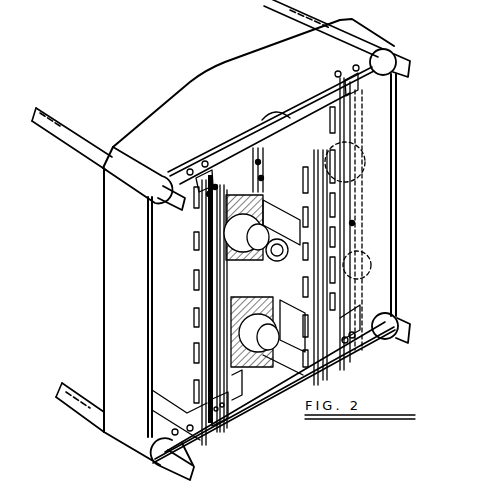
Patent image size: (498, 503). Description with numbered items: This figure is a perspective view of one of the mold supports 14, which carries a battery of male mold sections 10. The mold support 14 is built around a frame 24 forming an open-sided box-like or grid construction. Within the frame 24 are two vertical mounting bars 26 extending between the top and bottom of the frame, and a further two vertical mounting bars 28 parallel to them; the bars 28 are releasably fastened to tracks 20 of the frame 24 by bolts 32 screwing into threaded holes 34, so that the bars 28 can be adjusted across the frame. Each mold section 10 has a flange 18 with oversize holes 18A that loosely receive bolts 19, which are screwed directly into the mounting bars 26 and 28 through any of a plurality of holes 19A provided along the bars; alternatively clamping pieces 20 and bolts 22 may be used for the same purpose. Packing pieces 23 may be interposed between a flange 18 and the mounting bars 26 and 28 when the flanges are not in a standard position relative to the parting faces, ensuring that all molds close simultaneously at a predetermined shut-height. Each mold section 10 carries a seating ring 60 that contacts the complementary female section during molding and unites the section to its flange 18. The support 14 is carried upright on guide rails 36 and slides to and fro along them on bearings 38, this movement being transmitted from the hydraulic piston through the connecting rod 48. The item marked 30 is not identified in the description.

The male mold section 10 is at (205, 228).
The mold support 14 is at (117, 312).
The flange 18 is at (240, 383).
The oversize holes 18A is at (356, 218).
The bolts 19 is at (318, 143).
The holes 19A is at (198, 395).
The clamping pieces 20 is at (200, 213).
The bolts 22 is at (235, 187).
The packing pieces 23 is at (208, 337).
The frame 24 is at (203, 77).
The vertical mounting bars 26 is at (282, 113).
The vertical mounting bars 28 is at (200, 263).
The bracket 30 is at (180, 421).
The bolts 32 is at (195, 156).
The threaded holes 34 is at (225, 425).
The guide rails 36 is at (270, 4).
The bearings 38 is at (152, 200).
The connecting rod 48 is at (280, 240).
The seating ring 60 is at (261, 220).